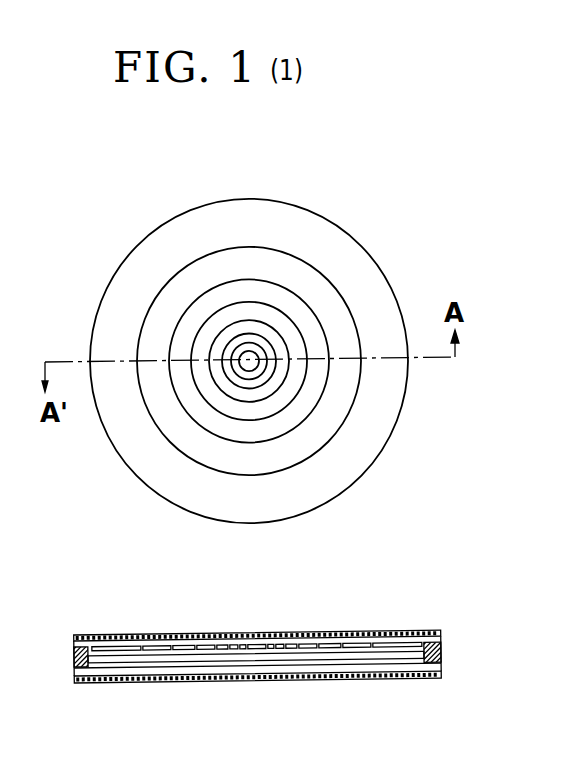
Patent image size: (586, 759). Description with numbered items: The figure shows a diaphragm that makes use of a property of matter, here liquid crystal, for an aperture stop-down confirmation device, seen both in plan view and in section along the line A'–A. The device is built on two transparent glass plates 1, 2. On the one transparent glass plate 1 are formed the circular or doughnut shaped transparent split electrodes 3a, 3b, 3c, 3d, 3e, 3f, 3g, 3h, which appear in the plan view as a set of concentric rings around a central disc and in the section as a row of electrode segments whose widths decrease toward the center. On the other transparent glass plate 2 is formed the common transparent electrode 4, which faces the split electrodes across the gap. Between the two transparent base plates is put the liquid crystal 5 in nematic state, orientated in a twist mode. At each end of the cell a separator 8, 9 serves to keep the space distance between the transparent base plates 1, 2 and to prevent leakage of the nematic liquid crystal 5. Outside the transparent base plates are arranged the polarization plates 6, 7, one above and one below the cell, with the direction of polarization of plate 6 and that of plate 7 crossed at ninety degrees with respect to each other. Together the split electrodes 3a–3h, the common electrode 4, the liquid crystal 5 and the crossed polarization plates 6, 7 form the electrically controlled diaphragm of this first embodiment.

The transparent glass plate 1 is at (442, 632).
The transparent glass plate 2 is at (442, 669).
The transparent split electrode 3a is at (113, 646).
The transparent split electrode 3b is at (158, 646).
The transparent split electrode 3c is at (185, 646).
The transparent split electrode 3d is at (207, 646).
The transparent split electrode 3e is at (220, 646).
The transparent split electrode 3f is at (234, 645).
The transparent split electrode 3g is at (243, 645).
The transparent split electrode 3h is at (262, 644).
The common transparent electrode 4 is at (258, 667).
The liquid crystal 5 is at (292, 660).
The polarization plate 6 is at (378, 631).
The polarization plate 7 is at (332, 675).
The separator 8 is at (73, 662).
The separator 9 is at (442, 650).